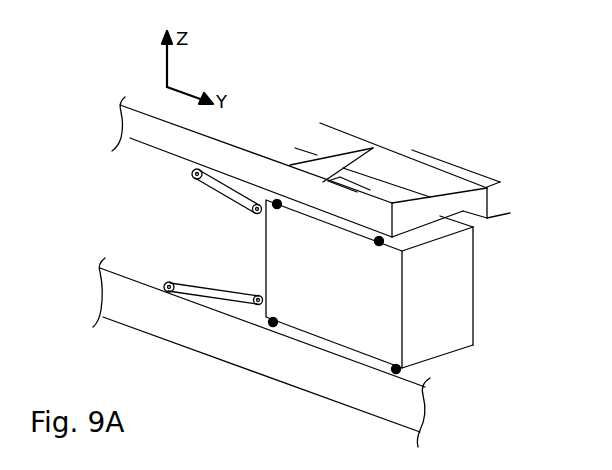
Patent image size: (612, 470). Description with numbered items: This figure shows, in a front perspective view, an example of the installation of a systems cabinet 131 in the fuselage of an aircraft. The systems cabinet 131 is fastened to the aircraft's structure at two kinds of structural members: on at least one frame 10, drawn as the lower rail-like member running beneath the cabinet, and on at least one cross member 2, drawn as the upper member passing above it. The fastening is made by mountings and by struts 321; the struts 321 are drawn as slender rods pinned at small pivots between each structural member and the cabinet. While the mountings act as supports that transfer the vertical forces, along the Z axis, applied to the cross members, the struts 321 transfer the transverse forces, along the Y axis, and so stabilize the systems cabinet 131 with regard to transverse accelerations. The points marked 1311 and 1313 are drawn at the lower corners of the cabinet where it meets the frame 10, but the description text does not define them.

The cross member 2 is at (224, 163).
The frame 10 is at (362, 390).
The systems cabinet 131 is at (443, 287).
The strut 321 is at (207, 285).
The first pivot pin 1311 is at (273, 325).
The second pivot pin 1313 is at (400, 371).